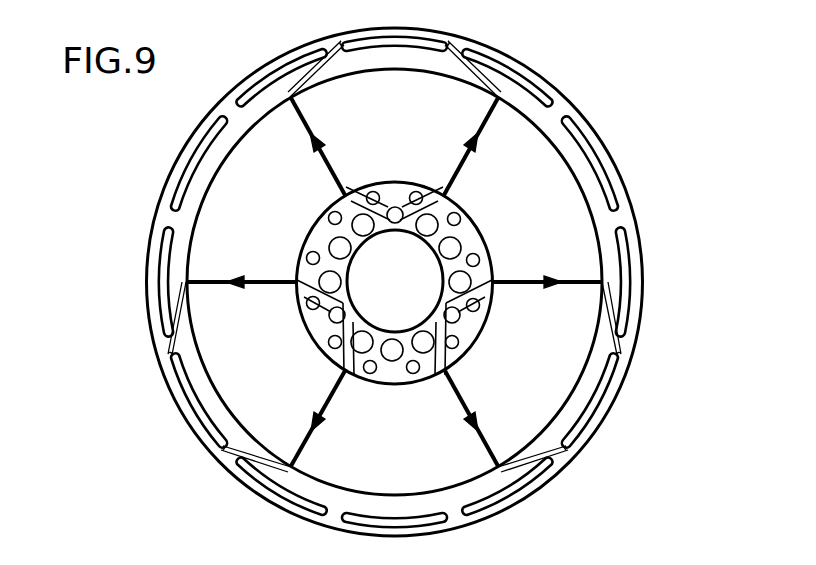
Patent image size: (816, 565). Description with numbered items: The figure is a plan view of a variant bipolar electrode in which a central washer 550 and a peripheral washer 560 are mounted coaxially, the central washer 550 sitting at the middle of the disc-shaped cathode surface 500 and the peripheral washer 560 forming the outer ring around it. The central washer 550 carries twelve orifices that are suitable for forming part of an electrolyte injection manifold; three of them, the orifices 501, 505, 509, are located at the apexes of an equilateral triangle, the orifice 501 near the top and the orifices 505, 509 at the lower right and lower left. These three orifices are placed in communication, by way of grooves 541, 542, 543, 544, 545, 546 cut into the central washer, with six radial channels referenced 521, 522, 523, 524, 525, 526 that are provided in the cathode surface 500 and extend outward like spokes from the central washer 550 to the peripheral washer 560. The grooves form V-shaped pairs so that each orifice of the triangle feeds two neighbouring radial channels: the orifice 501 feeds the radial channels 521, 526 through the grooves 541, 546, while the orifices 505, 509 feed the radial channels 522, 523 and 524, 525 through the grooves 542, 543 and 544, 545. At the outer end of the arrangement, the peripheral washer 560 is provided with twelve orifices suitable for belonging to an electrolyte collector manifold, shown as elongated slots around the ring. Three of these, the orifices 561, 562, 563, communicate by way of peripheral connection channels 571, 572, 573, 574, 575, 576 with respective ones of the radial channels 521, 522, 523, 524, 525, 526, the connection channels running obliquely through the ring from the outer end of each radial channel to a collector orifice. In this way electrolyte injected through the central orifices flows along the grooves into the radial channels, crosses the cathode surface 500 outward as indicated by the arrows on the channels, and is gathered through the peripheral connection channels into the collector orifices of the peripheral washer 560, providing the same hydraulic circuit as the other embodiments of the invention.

The cathode surface 500 is at (228, 90).
The orifice 501 is at (398, 208).
The orifice 505 is at (459, 314).
The orifice 509 is at (333, 321).
The radial channel 521 is at (486, 124).
The radial channel 522 is at (567, 281).
The radial channel 523 is at (478, 437).
The radial channel 524 is at (300, 450).
The radial channel 525 is at (222, 281).
The radial channel 526 is at (302, 108).
The groove 541 is at (463, 206).
The groove 542 is at (486, 277).
The groove 543 is at (430, 372).
The groove 544 is at (352, 372).
The groove 545 is at (303, 299).
The groove 546 is at (365, 192).
The central washer 550 is at (306, 242).
The peripheral washer 560 is at (163, 197).
The orifice 561 is at (453, 33).
The orifice 562 is at (585, 427).
The orifice 563 is at (177, 392).
The peripheral connection channel 571 is at (532, 70).
The peripheral connection channel 572 is at (618, 353).
The peripheral connection channel 573 is at (568, 457).
The peripheral connection channel 574 is at (229, 455).
The peripheral connection channel 575 is at (167, 337).
The peripheral connection channel 576 is at (337, 42).